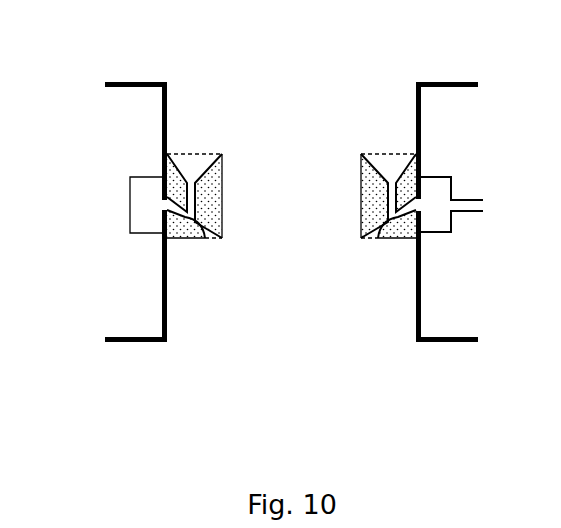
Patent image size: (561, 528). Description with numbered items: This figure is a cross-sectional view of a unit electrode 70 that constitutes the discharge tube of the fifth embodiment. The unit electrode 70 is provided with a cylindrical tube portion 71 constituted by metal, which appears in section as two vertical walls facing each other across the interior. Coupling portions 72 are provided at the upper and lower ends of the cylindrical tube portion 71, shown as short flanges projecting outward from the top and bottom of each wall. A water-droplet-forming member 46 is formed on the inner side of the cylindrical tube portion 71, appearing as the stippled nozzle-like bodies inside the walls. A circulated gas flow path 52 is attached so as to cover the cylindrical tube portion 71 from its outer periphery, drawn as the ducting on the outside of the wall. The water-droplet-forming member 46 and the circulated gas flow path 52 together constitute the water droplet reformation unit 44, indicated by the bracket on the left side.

The unit electrode 70 is at (98, 398).
The coupling portions 72 is at (470, 80).
The cylindrical tube portion 71 is at (421, 142).
The water droplet reformation unit 44 is at (108, 135).
The water-droplet-forming member 46 is at (376, 153).
The circulated gas flow path 52 is at (452, 230).